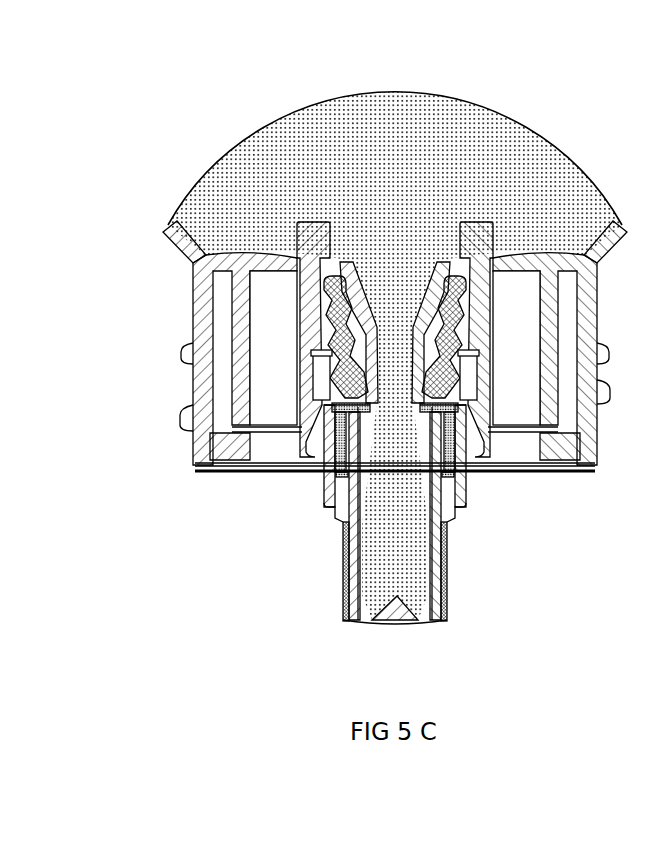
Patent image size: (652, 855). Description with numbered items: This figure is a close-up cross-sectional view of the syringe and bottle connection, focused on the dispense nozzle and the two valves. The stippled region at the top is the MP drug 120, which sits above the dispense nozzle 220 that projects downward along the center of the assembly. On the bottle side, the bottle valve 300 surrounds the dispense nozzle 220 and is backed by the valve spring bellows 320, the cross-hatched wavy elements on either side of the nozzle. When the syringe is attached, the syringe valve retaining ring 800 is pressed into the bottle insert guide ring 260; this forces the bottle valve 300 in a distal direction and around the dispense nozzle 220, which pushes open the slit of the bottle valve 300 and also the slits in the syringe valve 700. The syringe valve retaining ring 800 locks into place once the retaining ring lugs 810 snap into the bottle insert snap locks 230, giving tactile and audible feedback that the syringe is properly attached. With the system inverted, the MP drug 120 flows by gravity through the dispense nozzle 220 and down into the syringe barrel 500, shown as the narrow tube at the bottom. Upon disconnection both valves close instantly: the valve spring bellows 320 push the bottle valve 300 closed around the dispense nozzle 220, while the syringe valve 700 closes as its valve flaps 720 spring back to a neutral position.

The MP drug 120 is at (345, 170).
The dispense nozzle 220 is at (302, 400).
The valve spring bellows 320 is at (328, 328).
The bottle valve 300 is at (340, 377).
The bottle insert snap locks 230 is at (325, 405).
The retaining ring lugs 810 is at (210, 470).
The bottle insert guide ring 260 is at (533, 472).
The valve flaps 720 is at (463, 460).
The syringe valve retaining ring 800 is at (327, 498).
The syringe valve 700 is at (455, 410).
The syringe barrel 500 is at (345, 610).